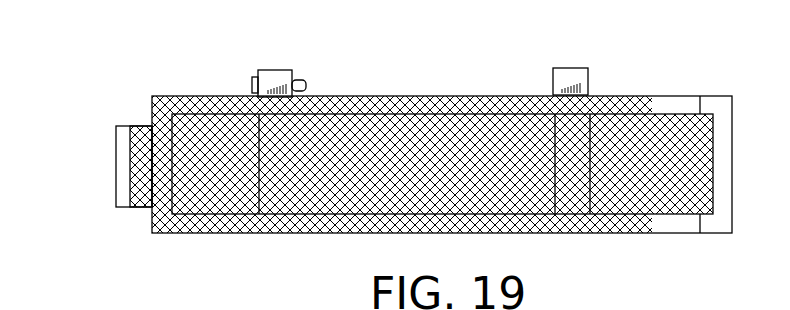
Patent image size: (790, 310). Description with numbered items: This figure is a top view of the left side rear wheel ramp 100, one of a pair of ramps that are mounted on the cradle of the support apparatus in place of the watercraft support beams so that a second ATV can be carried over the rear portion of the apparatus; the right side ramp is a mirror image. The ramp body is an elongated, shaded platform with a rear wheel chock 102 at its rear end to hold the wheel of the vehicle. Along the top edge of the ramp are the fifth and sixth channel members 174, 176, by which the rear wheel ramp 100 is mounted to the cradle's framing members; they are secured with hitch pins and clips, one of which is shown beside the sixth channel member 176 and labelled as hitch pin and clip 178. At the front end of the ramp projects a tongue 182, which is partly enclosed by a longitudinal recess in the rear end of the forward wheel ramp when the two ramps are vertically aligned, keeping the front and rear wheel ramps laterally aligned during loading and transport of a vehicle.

The rear wheel ramp 100 is at (445, 96).
The rear wheel chock 102 is at (670, 309).
The fifth channel member 174 is at (573, 66).
The sixth channel member 176 is at (282, 70).
The hitch pin and clip 178 is at (306, 80).
The tongue 182 is at (123, 126).